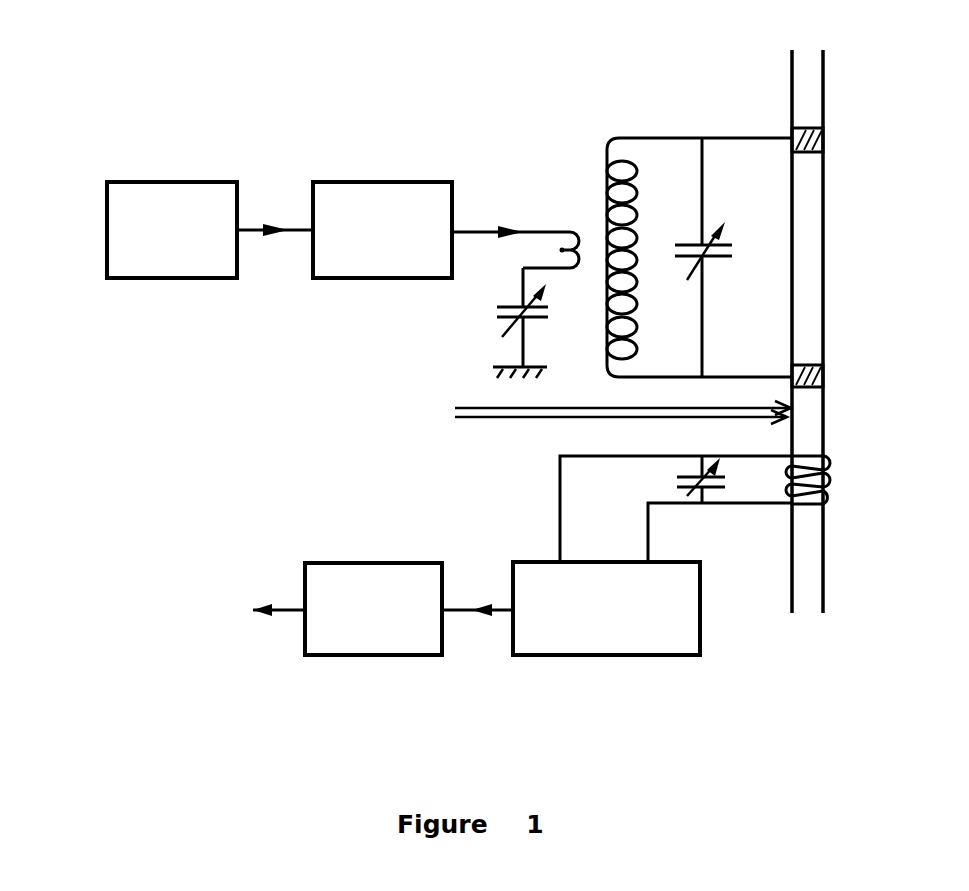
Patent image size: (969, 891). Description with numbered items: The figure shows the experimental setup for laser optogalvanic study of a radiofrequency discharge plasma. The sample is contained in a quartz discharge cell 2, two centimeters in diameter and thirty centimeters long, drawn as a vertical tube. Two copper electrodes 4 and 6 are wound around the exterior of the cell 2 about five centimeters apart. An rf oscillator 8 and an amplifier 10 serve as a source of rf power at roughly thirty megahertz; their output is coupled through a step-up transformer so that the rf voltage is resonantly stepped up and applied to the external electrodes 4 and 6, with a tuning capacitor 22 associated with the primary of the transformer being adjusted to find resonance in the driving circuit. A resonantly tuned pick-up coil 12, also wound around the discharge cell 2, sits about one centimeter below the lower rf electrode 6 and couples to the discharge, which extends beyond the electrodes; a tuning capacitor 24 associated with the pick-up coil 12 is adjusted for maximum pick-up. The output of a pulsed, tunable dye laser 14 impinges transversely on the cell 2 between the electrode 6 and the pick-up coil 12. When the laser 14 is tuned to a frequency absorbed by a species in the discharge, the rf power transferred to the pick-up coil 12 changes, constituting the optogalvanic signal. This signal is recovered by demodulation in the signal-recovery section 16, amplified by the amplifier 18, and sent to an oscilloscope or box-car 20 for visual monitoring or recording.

The quartz discharge cell 2 is at (807, 312).
The copper electrode 4 is at (822, 138).
The copper electrode 6 is at (822, 375).
The rf oscillator 8 is at (172, 234).
The amplifier 10 is at (382, 209).
The pick-up coil 12 is at (830, 480).
The pulsed, tunable dye laser 14 is at (569, 433).
The signal-recovery section 16 is at (606, 632).
The amplifier 18 is at (373, 633).
The oscilloscope or box-car 20 is at (172, 658).
The tuning capacitor 22 is at (497, 323).
The tuning capacitor 24 is at (678, 479).